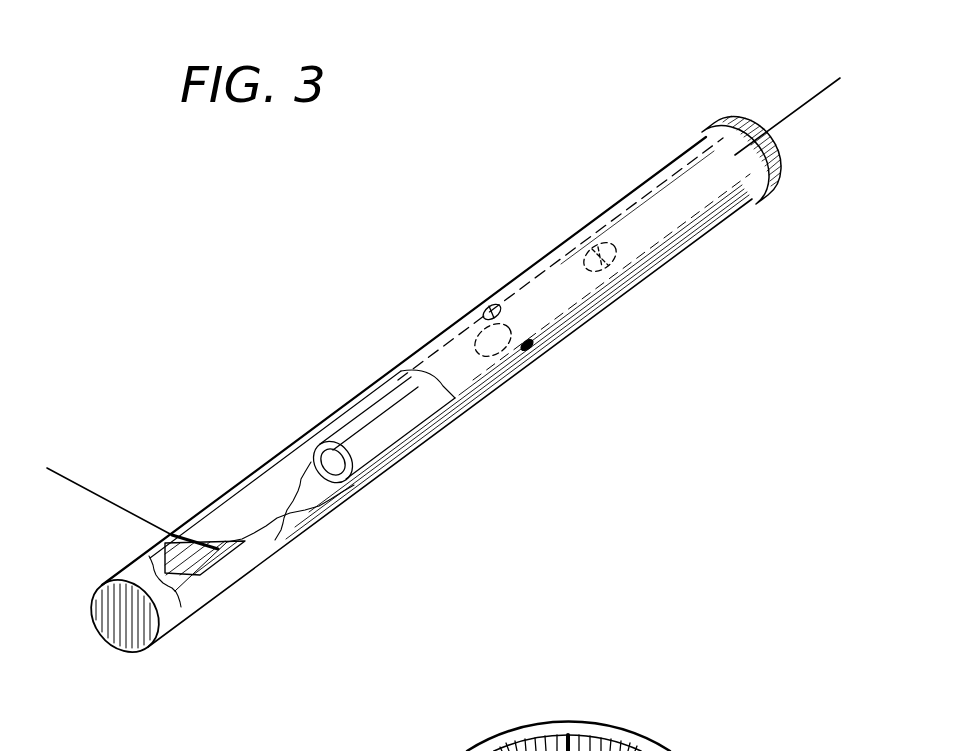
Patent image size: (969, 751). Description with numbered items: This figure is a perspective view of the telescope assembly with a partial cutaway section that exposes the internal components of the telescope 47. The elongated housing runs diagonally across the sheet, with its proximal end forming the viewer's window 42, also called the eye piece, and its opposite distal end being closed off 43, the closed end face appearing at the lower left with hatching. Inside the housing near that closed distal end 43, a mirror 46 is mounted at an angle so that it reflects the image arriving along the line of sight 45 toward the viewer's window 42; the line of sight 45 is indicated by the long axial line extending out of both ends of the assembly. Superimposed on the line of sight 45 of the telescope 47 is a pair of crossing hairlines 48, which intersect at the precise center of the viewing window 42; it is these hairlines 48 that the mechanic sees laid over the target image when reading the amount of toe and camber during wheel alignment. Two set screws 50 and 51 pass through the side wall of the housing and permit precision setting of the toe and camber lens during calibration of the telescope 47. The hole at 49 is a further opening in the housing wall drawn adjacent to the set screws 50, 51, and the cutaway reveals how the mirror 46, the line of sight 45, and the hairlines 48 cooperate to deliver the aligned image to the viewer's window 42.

The viewer's window 42 is at (780, 157).
The closed distal end 43 is at (126, 630).
The line of sight 45 is at (823, 88).
The mirror 46 is at (227, 553).
The telescope 47 is at (667, 190).
The crossing hairlines 48 is at (608, 244).
The cross hole 49 is at (490, 343).
The set screw 50 is at (490, 306).
The set screw 51 is at (533, 348).